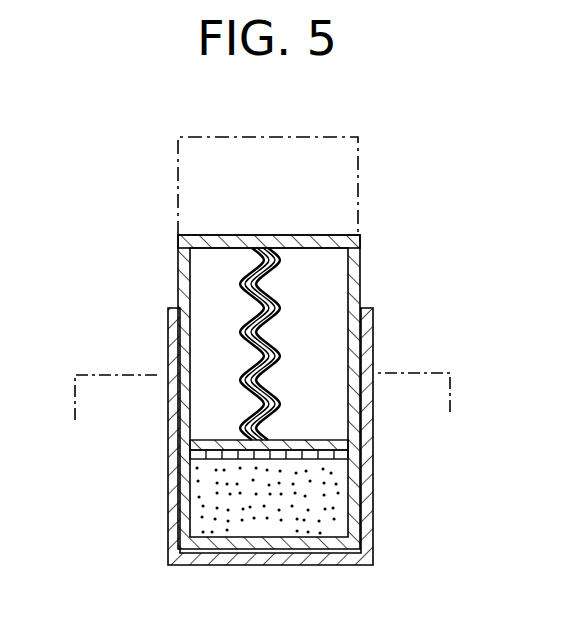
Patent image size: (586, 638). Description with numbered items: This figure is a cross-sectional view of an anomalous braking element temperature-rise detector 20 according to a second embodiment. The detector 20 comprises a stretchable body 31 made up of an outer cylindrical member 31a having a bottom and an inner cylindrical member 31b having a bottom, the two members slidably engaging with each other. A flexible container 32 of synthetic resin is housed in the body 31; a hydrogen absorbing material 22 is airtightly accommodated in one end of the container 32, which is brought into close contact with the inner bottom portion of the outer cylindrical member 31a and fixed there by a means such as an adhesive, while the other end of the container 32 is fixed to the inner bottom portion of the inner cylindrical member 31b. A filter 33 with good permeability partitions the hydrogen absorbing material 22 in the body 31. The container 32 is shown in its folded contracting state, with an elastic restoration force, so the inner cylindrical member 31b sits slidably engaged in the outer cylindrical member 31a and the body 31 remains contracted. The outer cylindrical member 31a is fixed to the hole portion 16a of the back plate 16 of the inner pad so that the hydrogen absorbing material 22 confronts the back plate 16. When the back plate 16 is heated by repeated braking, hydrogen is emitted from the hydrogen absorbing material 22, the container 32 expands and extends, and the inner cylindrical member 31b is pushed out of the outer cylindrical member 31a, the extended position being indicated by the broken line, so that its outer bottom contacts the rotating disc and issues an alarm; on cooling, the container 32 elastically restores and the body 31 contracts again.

The anomalous braking element temperature-rise detector 20 is at (405, 240).
The stretchable body 31 is at (174, 290).
The outer cylindrical member 31a is at (168, 343).
The inner cylindrical member 31b is at (178, 257).
The back plate 16 is at (452, 373).
The hole portion 16a is at (373, 533).
The flexible container 32 is at (280, 437).
The filter 33 is at (205, 470).
The hydrogen absorbing material 22 is at (280, 520).